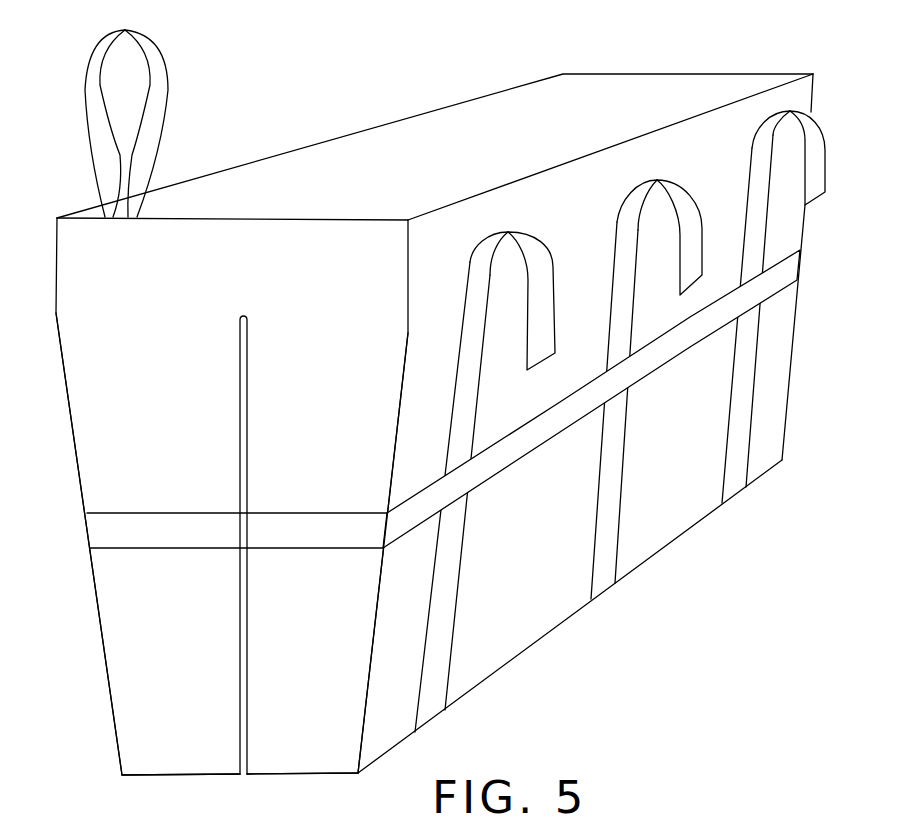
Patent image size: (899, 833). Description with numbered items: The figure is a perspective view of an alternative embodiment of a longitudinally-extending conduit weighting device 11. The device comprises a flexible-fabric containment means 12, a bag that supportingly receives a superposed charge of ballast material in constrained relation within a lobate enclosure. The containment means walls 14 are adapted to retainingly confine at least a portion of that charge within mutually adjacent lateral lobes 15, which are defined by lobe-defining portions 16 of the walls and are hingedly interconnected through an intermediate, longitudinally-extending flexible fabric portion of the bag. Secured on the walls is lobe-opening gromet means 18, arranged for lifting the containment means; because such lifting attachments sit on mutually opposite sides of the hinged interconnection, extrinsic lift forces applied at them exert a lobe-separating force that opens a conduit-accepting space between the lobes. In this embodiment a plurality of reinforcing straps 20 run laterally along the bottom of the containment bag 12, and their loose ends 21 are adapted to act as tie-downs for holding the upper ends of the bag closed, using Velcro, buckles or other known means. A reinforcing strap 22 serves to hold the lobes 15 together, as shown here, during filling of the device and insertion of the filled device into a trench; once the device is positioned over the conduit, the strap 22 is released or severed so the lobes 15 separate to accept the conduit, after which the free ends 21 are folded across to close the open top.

The conduit weighting device 11 is at (80, 597).
The containment means 12 is at (165, 311).
The containment means walls 14 is at (75, 440).
The lateral lobes 15 is at (187, 760).
The lobe-defining portions 16 is at (110, 703).
The lobe-opening gromet means 18 is at (168, 78).
The reinforcing straps 20 is at (433, 702).
The loose ends 21 is at (545, 328).
The reinforcing strap 22 is at (315, 527).